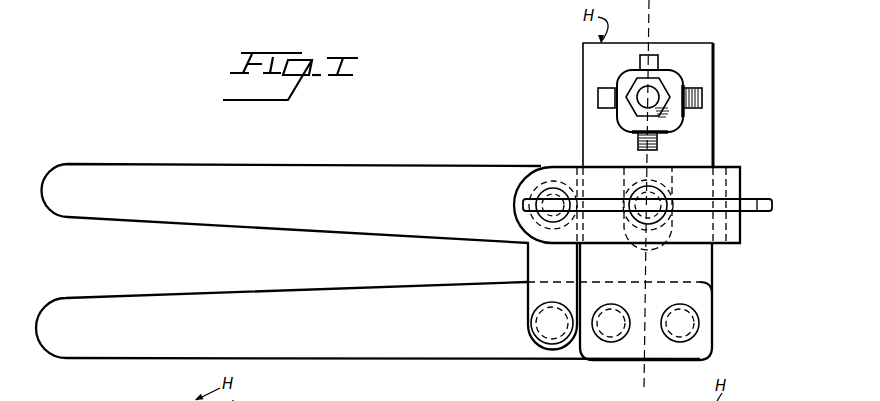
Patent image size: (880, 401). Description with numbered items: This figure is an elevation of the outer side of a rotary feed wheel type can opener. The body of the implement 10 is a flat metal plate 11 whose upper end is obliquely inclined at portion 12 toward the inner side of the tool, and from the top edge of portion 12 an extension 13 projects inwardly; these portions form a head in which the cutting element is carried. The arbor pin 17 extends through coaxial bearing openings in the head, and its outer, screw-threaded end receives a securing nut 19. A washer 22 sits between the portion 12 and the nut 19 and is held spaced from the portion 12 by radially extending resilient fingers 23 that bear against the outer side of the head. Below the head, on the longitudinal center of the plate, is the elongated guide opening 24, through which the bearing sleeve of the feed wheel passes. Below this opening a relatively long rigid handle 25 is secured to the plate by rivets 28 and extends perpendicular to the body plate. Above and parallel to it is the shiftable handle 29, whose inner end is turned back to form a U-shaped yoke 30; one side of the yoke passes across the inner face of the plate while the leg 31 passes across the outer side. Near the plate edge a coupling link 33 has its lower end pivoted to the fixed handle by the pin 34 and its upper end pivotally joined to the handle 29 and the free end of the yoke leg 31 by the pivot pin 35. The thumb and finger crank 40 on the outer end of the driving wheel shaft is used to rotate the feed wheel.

The body of the implement 10 is at (633, 17).
The flat metal plate 11 is at (622, 348).
The inclined portion of body plate 12 is at (703, 138).
The extension 13 is at (233, 400).
The arbor pin 17 is at (645, 93).
The securing nut 19 is at (635, 103).
The washer 22 is at (684, 80).
The resilient fingers 23 is at (658, 63).
The elongated guide opening 24 is at (653, 248).
The rigid handle 25 is at (463, 348).
The rivets 28 is at (685, 324).
The shiftable handle 29 is at (373, 164).
The yoke 30 is at (689, 176).
The yoke leg 31 is at (528, 243).
The coupling link 33 is at (537, 272).
The pin 34 is at (548, 333).
The pivot pin 35 is at (543, 187).
The thumb and finger crank 40 is at (762, 200).